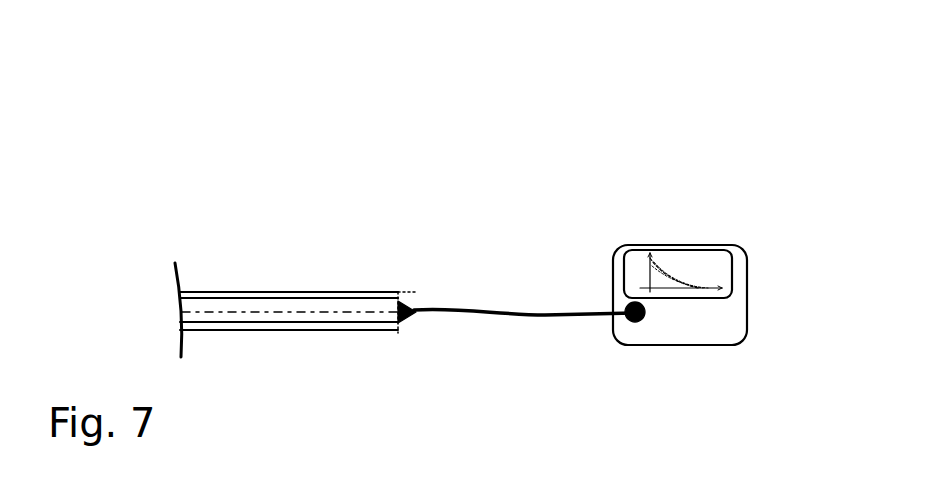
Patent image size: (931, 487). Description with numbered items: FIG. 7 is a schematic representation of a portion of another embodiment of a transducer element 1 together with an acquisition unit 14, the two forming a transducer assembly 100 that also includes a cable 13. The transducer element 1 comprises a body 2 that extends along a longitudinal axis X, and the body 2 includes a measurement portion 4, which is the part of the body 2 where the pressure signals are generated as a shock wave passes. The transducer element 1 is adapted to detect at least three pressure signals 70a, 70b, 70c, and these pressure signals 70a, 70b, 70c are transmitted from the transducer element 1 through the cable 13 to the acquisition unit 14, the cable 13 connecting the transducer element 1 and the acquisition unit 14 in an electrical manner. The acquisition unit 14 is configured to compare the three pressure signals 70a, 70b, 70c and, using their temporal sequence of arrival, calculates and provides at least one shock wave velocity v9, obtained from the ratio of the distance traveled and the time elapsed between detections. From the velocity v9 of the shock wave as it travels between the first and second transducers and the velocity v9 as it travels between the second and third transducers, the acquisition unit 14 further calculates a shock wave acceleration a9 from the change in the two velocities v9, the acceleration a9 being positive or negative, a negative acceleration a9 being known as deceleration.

The transducer assembly 100 is at (168, 130).
The transducer element 1 is at (168, 202).
The body 2 is at (475, 282).
The measurement portion 4 is at (228, 347).
The longitudinal axis X is at (282, 310).
The pressure signal 70a is at (502, 293).
The pressure signal 70b is at (523, 312).
The pressure signal 70c is at (523, 312).
The cable 13 is at (547, 315).
The acquisition unit 14 is at (697, 245).
The shock wave acceleration a9 is at (680, 350).
The shock wave velocity v9 is at (680, 295).